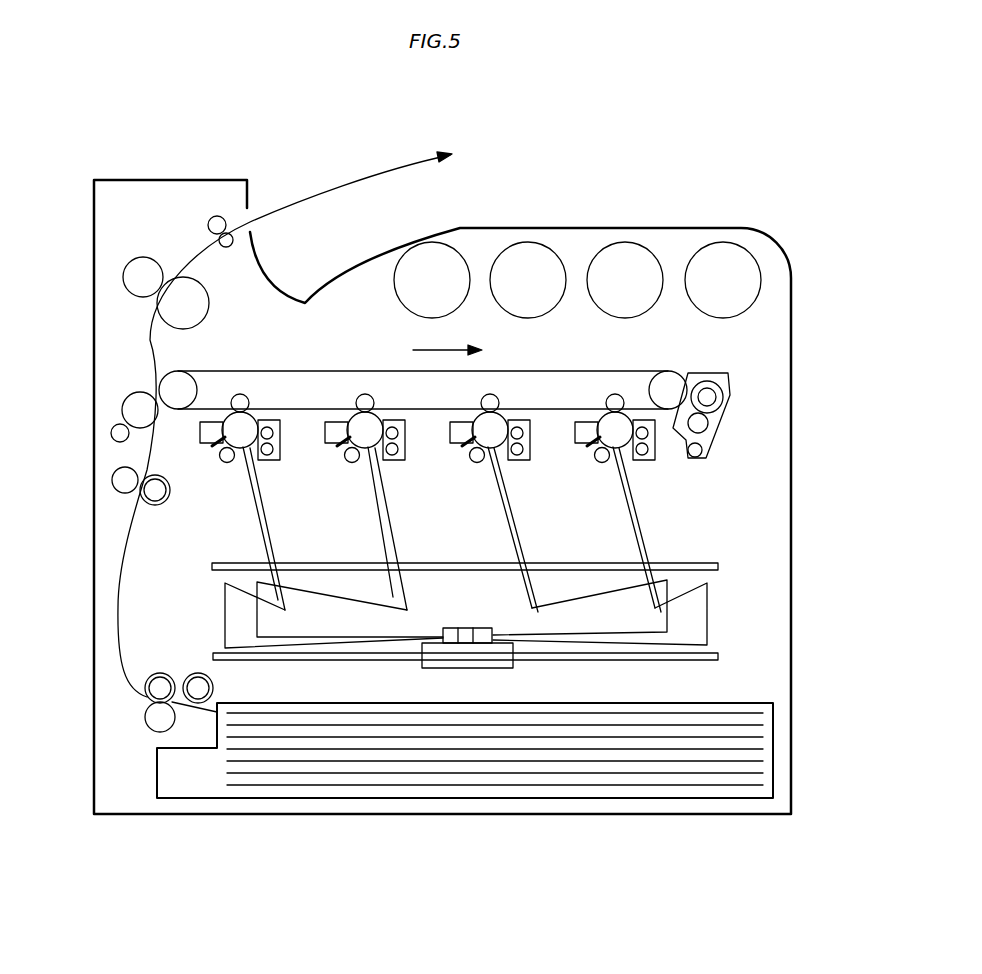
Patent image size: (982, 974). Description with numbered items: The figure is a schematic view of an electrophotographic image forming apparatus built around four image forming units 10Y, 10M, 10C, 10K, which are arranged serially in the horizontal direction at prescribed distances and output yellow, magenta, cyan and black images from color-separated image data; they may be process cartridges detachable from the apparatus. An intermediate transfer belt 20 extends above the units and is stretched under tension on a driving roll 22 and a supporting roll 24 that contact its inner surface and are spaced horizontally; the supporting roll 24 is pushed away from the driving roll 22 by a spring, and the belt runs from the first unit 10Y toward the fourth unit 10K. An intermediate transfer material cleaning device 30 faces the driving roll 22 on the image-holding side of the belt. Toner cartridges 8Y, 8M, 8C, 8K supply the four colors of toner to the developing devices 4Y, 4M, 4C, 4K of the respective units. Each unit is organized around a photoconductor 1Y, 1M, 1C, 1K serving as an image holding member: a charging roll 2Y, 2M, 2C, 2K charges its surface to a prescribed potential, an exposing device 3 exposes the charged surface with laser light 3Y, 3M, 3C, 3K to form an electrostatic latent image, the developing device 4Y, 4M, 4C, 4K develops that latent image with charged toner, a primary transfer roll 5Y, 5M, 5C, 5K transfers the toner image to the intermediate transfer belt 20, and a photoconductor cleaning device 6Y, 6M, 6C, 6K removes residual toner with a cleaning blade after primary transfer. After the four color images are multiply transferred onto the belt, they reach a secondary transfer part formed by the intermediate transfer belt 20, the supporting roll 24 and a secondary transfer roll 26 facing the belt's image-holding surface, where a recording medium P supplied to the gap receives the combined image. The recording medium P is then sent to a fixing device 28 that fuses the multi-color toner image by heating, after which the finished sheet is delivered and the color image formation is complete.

The toner cartridge 8K is at (432, 262).
The toner cartridge 8C is at (527, 262).
The toner cartridge 8M is at (627, 262).
The toner cartridge 8Y is at (723, 262).
The intermediate transfer belt 20 is at (570, 371).
The driving roll 22 is at (670, 374).
The supporting roll 24 is at (180, 386).
The secondary transfer roll 26 is at (120, 411).
The fixing device 28 is at (162, 318).
The intermediate transfer material cleaning device 30 is at (728, 374).
The primary transfer roll 5K is at (247, 397).
The primary transfer roll 5C is at (372, 398).
The primary transfer roll 5M is at (497, 397).
The primary transfer roll 5Y is at (619, 395).
The photoconductor 1K is at (252, 449).
The photoconductor 1C is at (377, 449).
The photoconductor 1M is at (502, 449).
The photoconductor 1Y is at (627, 449).
The charging roll 2K is at (227, 463).
The charging roll 2C is at (352, 463).
The charging roll 2M is at (477, 463).
The charging roll 2Y is at (602, 463).
The developing device 4K is at (279, 463).
The developing device 4C is at (404, 463).
The developing device 4M is at (530, 463).
The developing device 4Y is at (654, 463).
The photoconductor cleaning device 6K is at (198, 443).
The photoconductor cleaning device 6C is at (323, 443).
The photoconductor cleaning device 6M is at (448, 443).
The photoconductor cleaning device 6Y is at (573, 443).
The image forming unit 10K is at (246, 465).
The image forming unit 10C is at (371, 467).
The image forming unit 10M is at (496, 465).
The image forming unit 10Y is at (621, 449).
The laser light 3K is at (225, 617).
The laser light 3C is at (312, 593).
The laser light 3M is at (577, 600).
The laser light 3Y is at (708, 612).
The exposing device 3 is at (517, 667).
The recording medium P is at (750, 757).